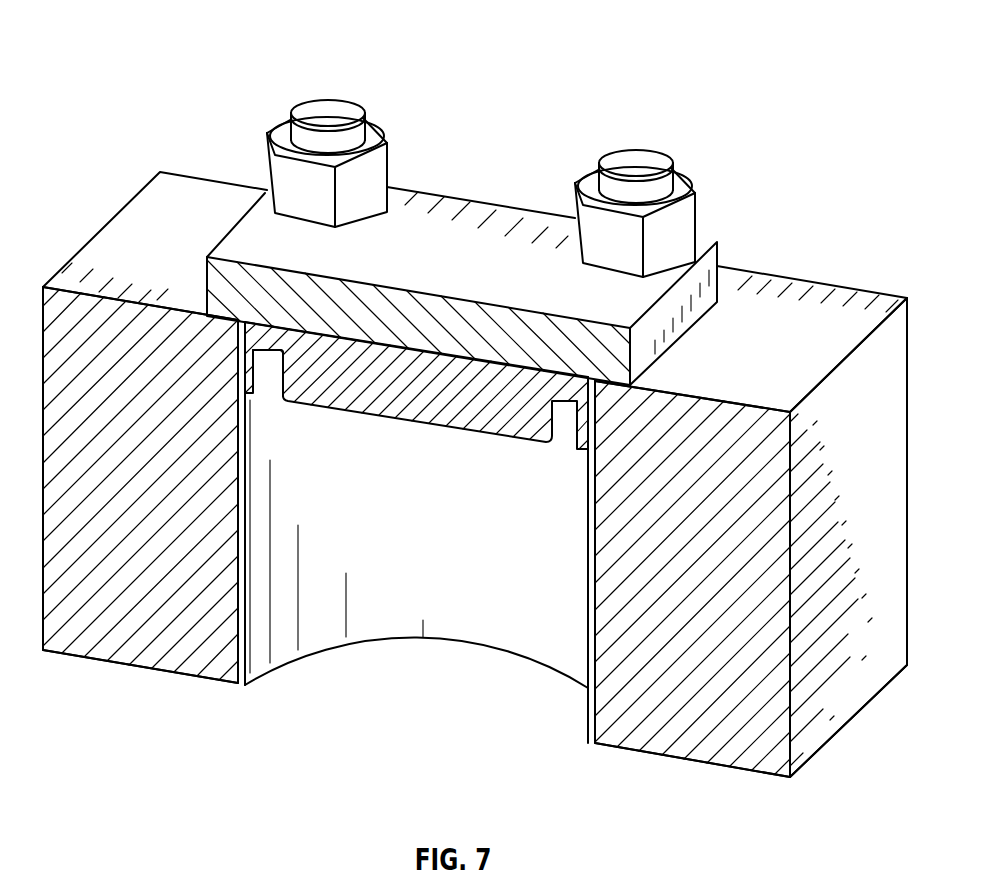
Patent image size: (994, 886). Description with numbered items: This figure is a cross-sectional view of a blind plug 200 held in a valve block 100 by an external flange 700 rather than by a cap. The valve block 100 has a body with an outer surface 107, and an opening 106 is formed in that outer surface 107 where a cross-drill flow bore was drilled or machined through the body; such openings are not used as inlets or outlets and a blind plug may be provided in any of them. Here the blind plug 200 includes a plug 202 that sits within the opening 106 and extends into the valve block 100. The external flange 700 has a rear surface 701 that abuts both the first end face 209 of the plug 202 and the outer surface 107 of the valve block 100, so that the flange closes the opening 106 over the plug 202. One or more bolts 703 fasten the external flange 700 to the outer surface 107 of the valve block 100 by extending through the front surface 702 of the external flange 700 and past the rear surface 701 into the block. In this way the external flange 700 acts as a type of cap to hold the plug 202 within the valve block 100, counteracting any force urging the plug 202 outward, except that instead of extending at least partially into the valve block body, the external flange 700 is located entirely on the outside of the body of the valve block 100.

The external flange 700 is at (155, 48).
The valve block 100 is at (703, 756).
The opening 106 is at (170, 664).
The outer surface 107 is at (828, 302).
The blind plug 200 is at (232, 139).
The rear surface 701 is at (407, 347).
The front surface 702 is at (292, 179).
The bolt 703 is at (507, 219).
The plug 202 is at (463, 407).
The first end face 209 is at (363, 343).